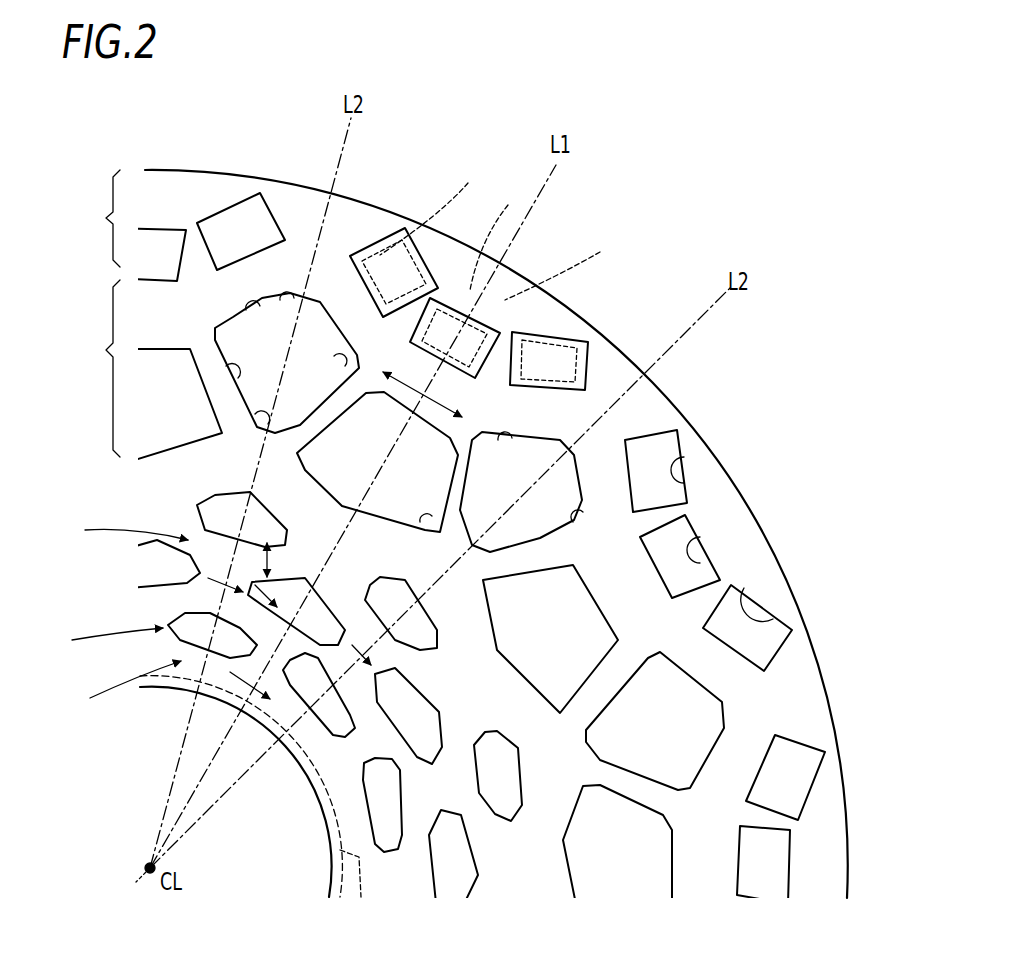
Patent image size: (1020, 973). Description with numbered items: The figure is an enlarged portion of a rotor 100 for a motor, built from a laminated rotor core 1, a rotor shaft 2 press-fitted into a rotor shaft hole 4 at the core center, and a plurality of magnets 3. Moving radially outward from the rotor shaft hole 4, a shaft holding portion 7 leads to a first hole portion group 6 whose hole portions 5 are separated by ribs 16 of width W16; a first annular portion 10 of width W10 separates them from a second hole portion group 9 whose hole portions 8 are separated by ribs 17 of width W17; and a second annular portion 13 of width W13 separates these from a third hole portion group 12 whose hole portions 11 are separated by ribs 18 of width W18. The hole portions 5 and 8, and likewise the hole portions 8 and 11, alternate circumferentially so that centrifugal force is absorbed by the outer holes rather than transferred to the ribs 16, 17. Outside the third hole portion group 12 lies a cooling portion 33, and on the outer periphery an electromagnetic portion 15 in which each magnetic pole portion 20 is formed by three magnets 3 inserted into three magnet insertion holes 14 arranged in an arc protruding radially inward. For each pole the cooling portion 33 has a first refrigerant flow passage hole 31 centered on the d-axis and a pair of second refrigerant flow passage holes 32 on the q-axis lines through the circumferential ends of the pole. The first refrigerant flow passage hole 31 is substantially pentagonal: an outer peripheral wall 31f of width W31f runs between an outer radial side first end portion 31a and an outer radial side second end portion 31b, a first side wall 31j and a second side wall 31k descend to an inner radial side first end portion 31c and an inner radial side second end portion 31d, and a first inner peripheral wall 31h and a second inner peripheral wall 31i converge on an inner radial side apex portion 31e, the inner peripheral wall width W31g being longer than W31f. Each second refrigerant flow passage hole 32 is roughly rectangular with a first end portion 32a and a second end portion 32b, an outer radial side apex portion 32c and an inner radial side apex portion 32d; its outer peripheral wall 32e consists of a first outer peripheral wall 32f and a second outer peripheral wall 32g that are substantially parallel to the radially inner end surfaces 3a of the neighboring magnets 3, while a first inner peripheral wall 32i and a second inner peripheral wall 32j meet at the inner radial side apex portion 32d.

The rotor 100 is at (606, 210).
The rotor core 1 is at (813, 640).
The rotor shaft 2 is at (254, 800).
The magnet 3 is at (498, 228).
The radially inner end surface 3a is at (448, 300).
The rotor shaft hole 4 is at (322, 820).
The hole portion 5 is at (367, 798).
The first hole portion group 6 is at (104, 639).
The shaft holding portion 7 is at (120, 687).
The hole portion 8 is at (478, 872).
The second hole portion group 9 is at (165, 548).
The first annular portion 10 is at (200, 588).
The hole portion 11 is at (490, 722).
The third hole portion group 12 is at (203, 504).
The second annular portion 13 is at (121, 526).
The magnet insertion hole 14 is at (672, 470).
The electromagnetic portion 15 is at (97, 218).
The rib 16 is at (283, 668).
The rib 17 is at (383, 715).
The rib 18 is at (374, 581).
The magnetic pole portion 20 is at (848, 535).
The first refrigerant flow passage hole 31 is at (170, 350).
The outer radial side first end portion 31a is at (352, 403).
The outer radial side second end portion 31b is at (456, 425).
The inner radial side first end portion 31c is at (290, 456).
The inner radial side second end portion 31d is at (437, 534).
The inner radial side apex portion 31e is at (363, 548).
The outer peripheral wall 31f is at (369, 434).
The first inner peripheral wall 31h is at (325, 472).
The second inner peripheral wall 31i is at (405, 462).
The first side wall 31j is at (346, 468).
The second side wall 31k is at (472, 450).
The second refrigerant flow passage hole 32 is at (317, 327).
The first end portion 32a is at (247, 310).
The second end portion 32b is at (340, 368).
The outer radial side apex portion 32c is at (300, 297).
The inner radial side apex portion 32d is at (247, 428).
The outer peripheral wall 32e is at (498, 467).
The first outer peripheral wall 32f is at (257, 312).
The second outer peripheral wall 32g is at (717, 402).
The first inner peripheral wall 32i is at (235, 378).
The second inner peripheral wall 32j is at (600, 552).
The cooling portion 33 is at (97, 368).
The width of first annular portion W10 is at (240, 612).
The width of second annular portion W13 is at (229, 556).
The width of rib W16 is at (253, 744).
The width of rib W17 is at (427, 664).
The width of rib W18 is at (272, 552).
The width of outer peripheral wall W31f is at (409, 373).
The width of inner peripheral wall W31g is at (458, 603).